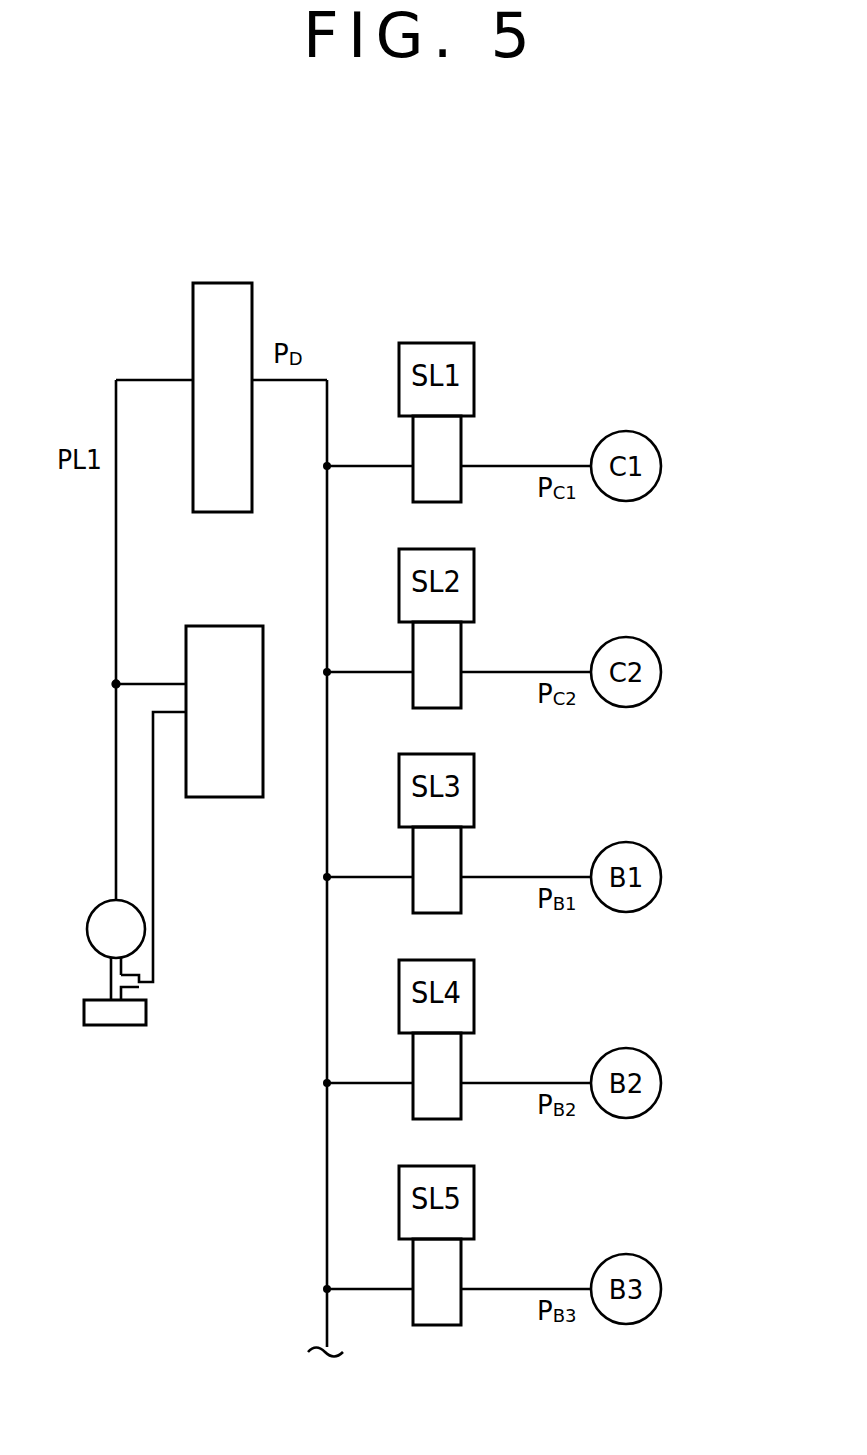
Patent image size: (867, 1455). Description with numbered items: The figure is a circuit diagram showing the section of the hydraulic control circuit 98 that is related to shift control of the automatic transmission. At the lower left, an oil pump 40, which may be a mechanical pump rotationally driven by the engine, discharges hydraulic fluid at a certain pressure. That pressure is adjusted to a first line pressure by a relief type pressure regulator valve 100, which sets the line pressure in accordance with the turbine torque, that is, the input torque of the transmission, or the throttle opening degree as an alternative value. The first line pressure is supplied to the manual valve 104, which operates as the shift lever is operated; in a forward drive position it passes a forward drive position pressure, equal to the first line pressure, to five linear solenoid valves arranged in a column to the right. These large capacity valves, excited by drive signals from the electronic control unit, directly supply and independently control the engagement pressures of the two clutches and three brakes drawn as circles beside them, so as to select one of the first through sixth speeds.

The hydraulic control circuit 98 is at (633, 278).
The manual valve 104 is at (218, 283).
The pressure regulator valve 100 is at (223, 640).
The oil pump 40 is at (98, 920).